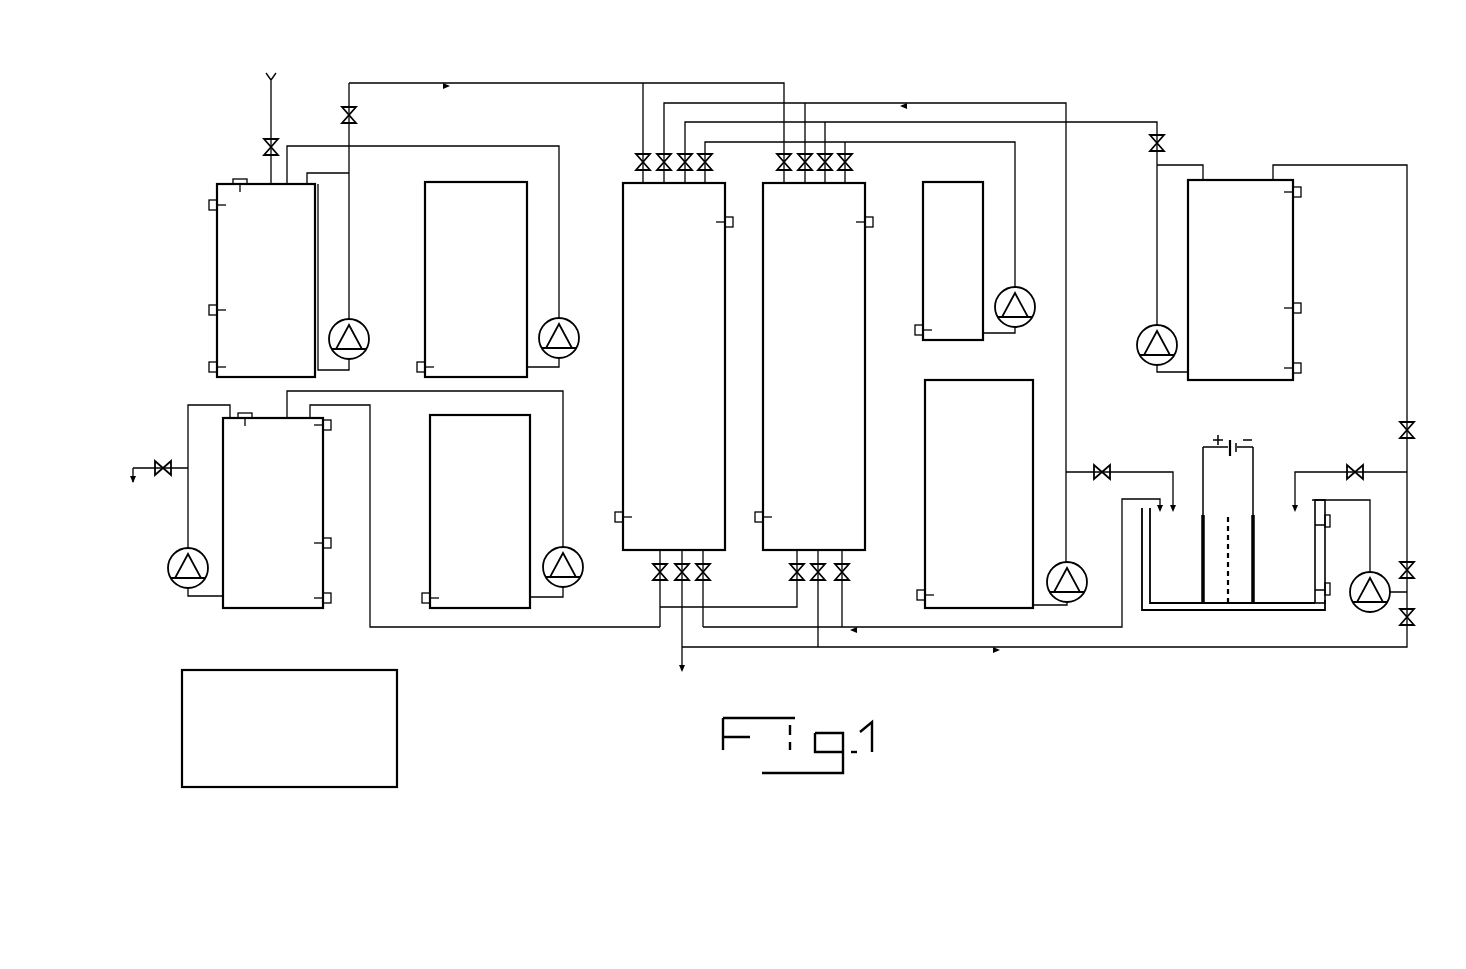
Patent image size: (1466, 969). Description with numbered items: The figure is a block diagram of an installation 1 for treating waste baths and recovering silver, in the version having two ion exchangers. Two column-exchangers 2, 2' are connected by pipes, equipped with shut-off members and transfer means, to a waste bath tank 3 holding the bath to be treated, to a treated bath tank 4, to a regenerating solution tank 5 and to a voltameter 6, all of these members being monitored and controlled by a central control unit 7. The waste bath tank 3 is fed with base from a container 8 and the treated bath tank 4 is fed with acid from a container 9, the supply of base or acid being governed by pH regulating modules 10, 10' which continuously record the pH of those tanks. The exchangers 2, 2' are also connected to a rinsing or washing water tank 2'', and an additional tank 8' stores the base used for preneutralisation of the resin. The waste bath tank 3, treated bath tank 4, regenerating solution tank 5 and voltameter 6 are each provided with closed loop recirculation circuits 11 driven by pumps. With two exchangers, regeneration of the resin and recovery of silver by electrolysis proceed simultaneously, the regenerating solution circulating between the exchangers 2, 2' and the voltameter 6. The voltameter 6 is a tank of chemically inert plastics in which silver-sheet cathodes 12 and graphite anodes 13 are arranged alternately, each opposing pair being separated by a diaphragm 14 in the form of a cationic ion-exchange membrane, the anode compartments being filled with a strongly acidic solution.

The installation 1 is at (1131, 69).
The column-exchanger 2 is at (685, 366).
The column-exchanger 2' is at (829, 366).
The rinsing or washing water tank 2'' is at (956, 494).
The waste bath tank 3 is at (217, 270).
The treated bath tank 4 is at (270, 610).
The regenerating solution tank 5 is at (1297, 277).
The voltameter 6 is at (1163, 608).
The central control unit 7 is at (388, 708).
The base container 8 is at (457, 279).
The additional base storage tank 8' is at (931, 261).
The acid container 9 is at (487, 610).
The pH regulating module 10 is at (234, 156).
The pH regulating module 10' is at (258, 403).
The closed loop recirculation circuit 11 is at (352, 250).
The cathode 12 is at (1255, 546).
The anode 13 is at (1200, 550).
The diaphragm 14 is at (1227, 515).